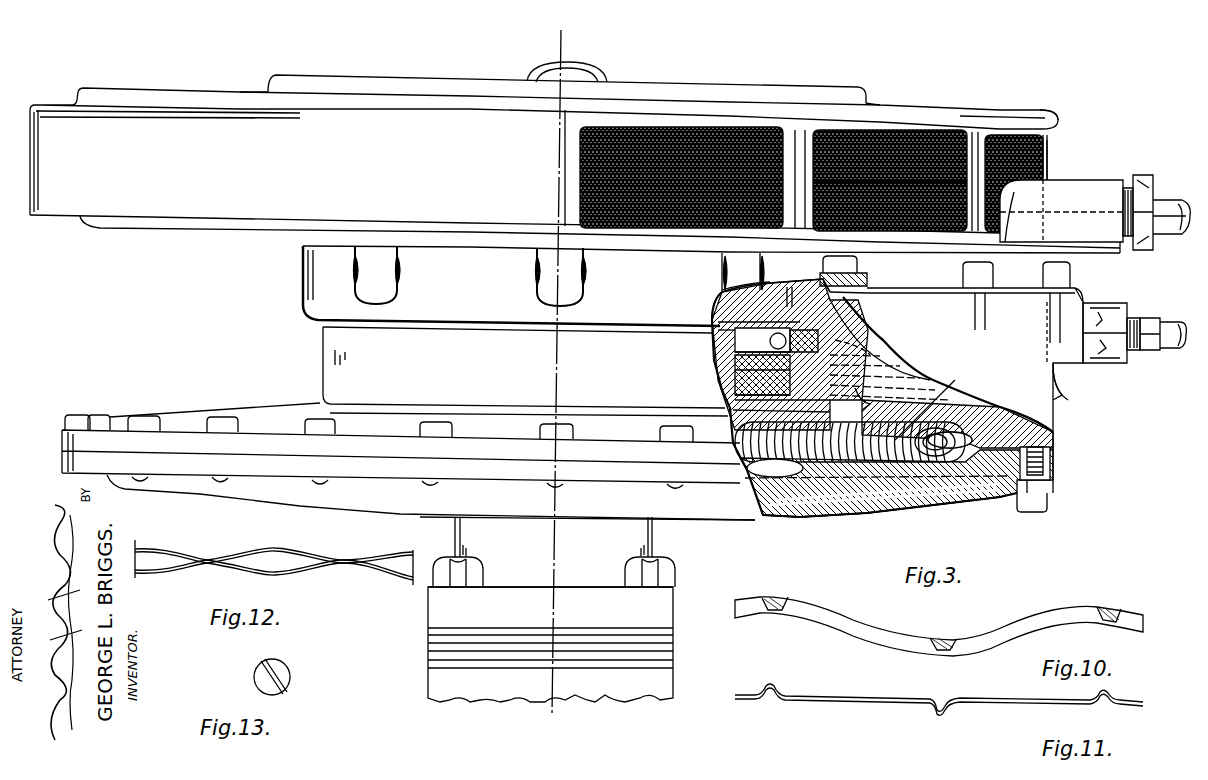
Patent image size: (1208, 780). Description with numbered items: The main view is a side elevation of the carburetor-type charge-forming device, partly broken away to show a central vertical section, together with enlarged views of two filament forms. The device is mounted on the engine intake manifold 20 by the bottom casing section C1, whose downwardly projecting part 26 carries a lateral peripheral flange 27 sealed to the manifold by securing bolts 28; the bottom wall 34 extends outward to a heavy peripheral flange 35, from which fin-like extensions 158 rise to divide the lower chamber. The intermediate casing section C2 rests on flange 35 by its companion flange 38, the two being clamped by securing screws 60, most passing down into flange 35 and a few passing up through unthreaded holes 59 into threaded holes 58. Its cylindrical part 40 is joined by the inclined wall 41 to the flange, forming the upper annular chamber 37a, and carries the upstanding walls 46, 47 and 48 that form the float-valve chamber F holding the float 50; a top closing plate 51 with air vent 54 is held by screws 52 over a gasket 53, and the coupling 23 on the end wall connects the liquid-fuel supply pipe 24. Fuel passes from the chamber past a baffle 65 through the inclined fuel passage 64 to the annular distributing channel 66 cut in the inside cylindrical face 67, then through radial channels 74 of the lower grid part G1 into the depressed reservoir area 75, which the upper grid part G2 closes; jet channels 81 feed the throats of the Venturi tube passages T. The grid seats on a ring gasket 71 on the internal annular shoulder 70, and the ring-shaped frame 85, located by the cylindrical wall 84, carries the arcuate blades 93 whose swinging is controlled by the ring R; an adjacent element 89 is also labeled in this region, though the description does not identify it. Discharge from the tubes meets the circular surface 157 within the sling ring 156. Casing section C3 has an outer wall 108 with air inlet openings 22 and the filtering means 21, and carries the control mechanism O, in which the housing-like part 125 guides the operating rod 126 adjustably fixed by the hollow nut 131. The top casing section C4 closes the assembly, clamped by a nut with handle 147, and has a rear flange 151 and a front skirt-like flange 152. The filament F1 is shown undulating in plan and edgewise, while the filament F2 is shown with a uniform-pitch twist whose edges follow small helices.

In FIG. 3, the top casing section C4 is at (232, 110).
In FIG. 3, the handle 147 is at (576, 72).
In FIG. 3, the air inlet openings 22 is at (820, 132).
In FIG. 3, the air-cleaning or filtering means 21 is at (926, 135).
In FIG. 3, the flange 151 is at (1060, 124).
In FIG. 3, the outer peripheral upstanding wall 108 is at (1046, 162).
In FIG. 3, the housing-like part 125 is at (1070, 190).
In FIG. 3, the control mechanism O is at (1082, 206).
In FIG. 3, the operating rod 126 is at (1164, 205).
In FIG. 3, the hollow nut 131 is at (1148, 238).
In FIG. 3, the skirt-like flange 152 is at (64, 207).
In FIG. 3, the casing section C3 is at (202, 238).
In FIG. 3, the intermediate casing section C2 is at (338, 346).
In FIG. 3, the interiorly cylindrical wall 84 is at (822, 274).
In FIG. 3, the arcuate blades 93 is at (722, 290).
In FIG. 3, the ring-shaped frame 85 is at (752, 298).
In FIG. 3, the ring R is at (751, 271).
In FIG. 3, the bolt head 89 is at (800, 290).
In FIG. 3, the air vent 54 is at (846, 291).
In FIG. 3, the upstanding side wall 46 is at (862, 302).
In FIG. 3, the top closing plate 51 is at (1005, 290).
In FIG. 3, the screws 52 is at (1066, 276).
In FIG. 3, the gasket 53 is at (1076, 302).
In FIG. 3, the float-valve chamber F is at (1006, 332).
In FIG. 3, the jet channel 81 is at (720, 320).
In FIG. 3, the upper grid part G2 is at (726, 318).
In FIG. 3, the depressed reservoir area 75 is at (726, 328).
In FIG. 3, the distributing channel 66 is at (935, 364).
In FIG. 3, the float 50 is at (862, 310).
In FIG. 3, the cylindrical part 40 is at (835, 350).
In FIG. 3, the tube passages T is at (716, 336).
In FIG. 3, the lower grid part G1 is at (722, 346).
In FIG. 3, the radially-inwardly extending channels 74 is at (730, 340).
In FIG. 3, the fuel passage 64 is at (860, 358).
In FIG. 3, the baffle 65 is at (862, 402).
In FIG. 3, the inside cylindrical face 67 is at (732, 372).
In FIG. 3, the ring gasket 71 is at (745, 392).
In FIG. 3, the inclined wall 41 is at (952, 434).
In FIG. 3, the upper annular chamber 37a is at (982, 448).
In FIG. 3, the coupling 23 is at (1104, 342).
In FIG. 3, the liquid-fuel supply pipe 24 is at (1180, 350).
In FIG. 3, the internal annular shoulder 70 is at (745, 402).
In FIG. 3, the sling ring 156 is at (740, 440).
In FIG. 3, the circular surface 157 is at (748, 462).
In FIG. 3, the end wall 47 is at (1063, 388).
In FIG. 3, the upstanding wall 48 is at (1028, 403).
In FIG. 3, the companion flange 38 is at (1050, 452).
In FIG. 3, the threaded holes 58 is at (1050, 464).
In FIG. 3, the peripheral flange 35 is at (205, 490).
In FIG. 3, the securing screws 60 is at (220, 422).
In FIG. 3, the bottom wall 34 is at (898, 514).
In FIG. 3, the fin-like extensions 158 is at (924, 492).
In FIG. 3, the unthreaded holes 59 is at (1040, 476).
In FIG. 3, the base or bottom casing section C1 is at (456, 500).
In FIG. 3, the downwardly projecting part 26 is at (620, 541).
In FIG. 3, the securing bolts 28 is at (660, 572).
In FIG. 3, the lateral peripheral flange 27 is at (650, 608).
In FIG. 3, the intake manifold 20 is at (642, 688).
In FIG. 10, the ribbon filament F1 is at (988, 636).
In FIG. 11, the ribbon filament F1 is at (990, 698).
In FIG. 12, the twisted ribbon filament F2 is at (316, 560).
In FIG. 13, the twisted ribbon filament F2 is at (280, 672).